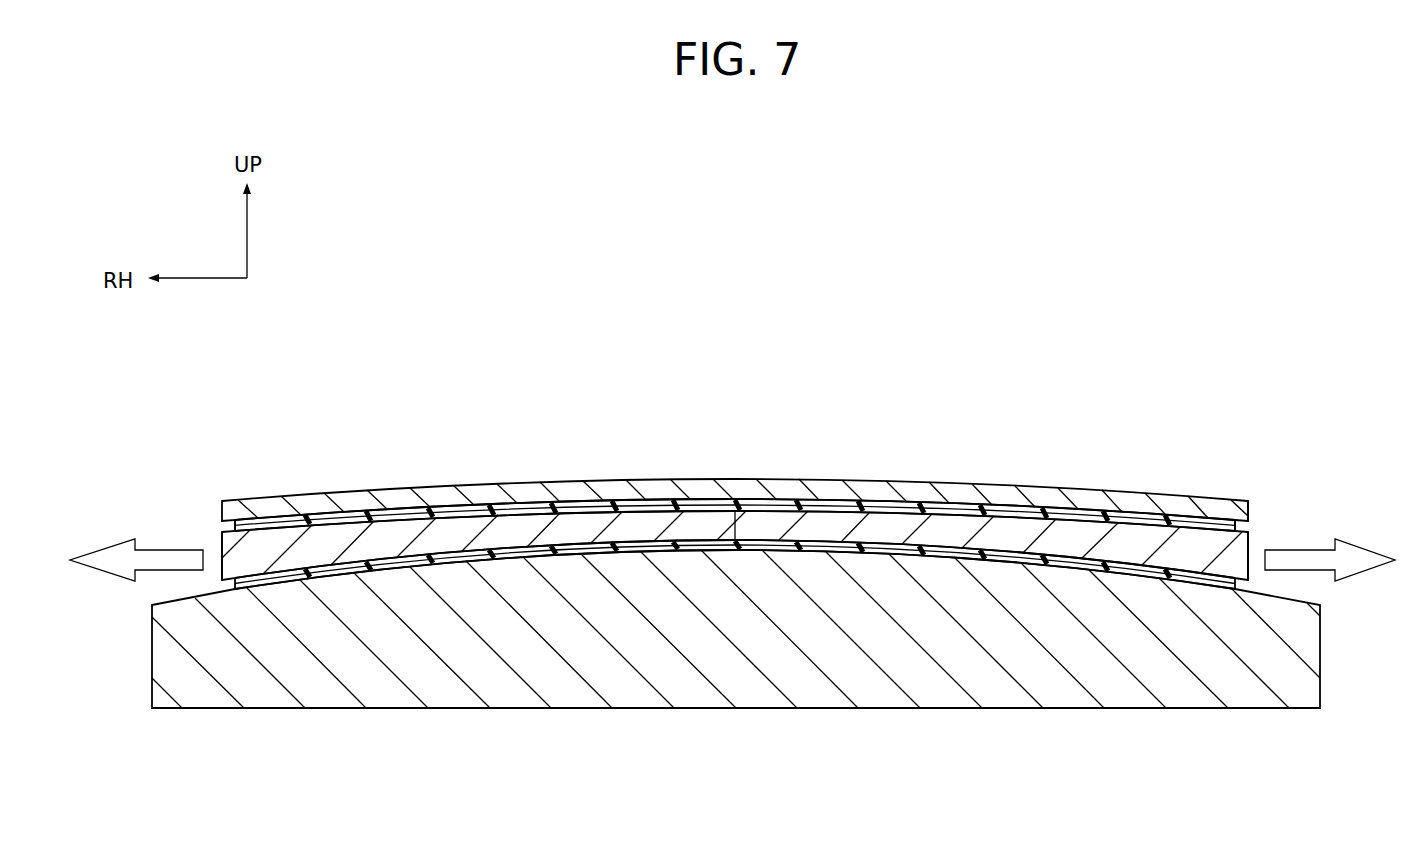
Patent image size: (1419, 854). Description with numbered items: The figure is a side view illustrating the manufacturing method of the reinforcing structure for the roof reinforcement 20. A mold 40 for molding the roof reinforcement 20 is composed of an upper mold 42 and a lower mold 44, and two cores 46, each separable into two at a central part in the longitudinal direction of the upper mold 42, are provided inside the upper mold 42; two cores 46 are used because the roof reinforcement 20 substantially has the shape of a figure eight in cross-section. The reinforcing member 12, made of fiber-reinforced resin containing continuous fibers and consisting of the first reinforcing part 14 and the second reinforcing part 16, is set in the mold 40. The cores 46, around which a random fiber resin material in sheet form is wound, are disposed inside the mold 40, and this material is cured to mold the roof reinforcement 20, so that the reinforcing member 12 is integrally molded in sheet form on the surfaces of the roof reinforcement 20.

The reinforcing member 12 is at (735, 467).
The first reinforcing part 14 is at (527, 500).
The second reinforcing part 16 is at (570, 562).
The roof reinforcement 20 is at (829, 495).
The mold 40 is at (1094, 450).
The upper mold 42 is at (1218, 499).
The lower mold 44 is at (1235, 708).
The cores 46 is at (230, 545).